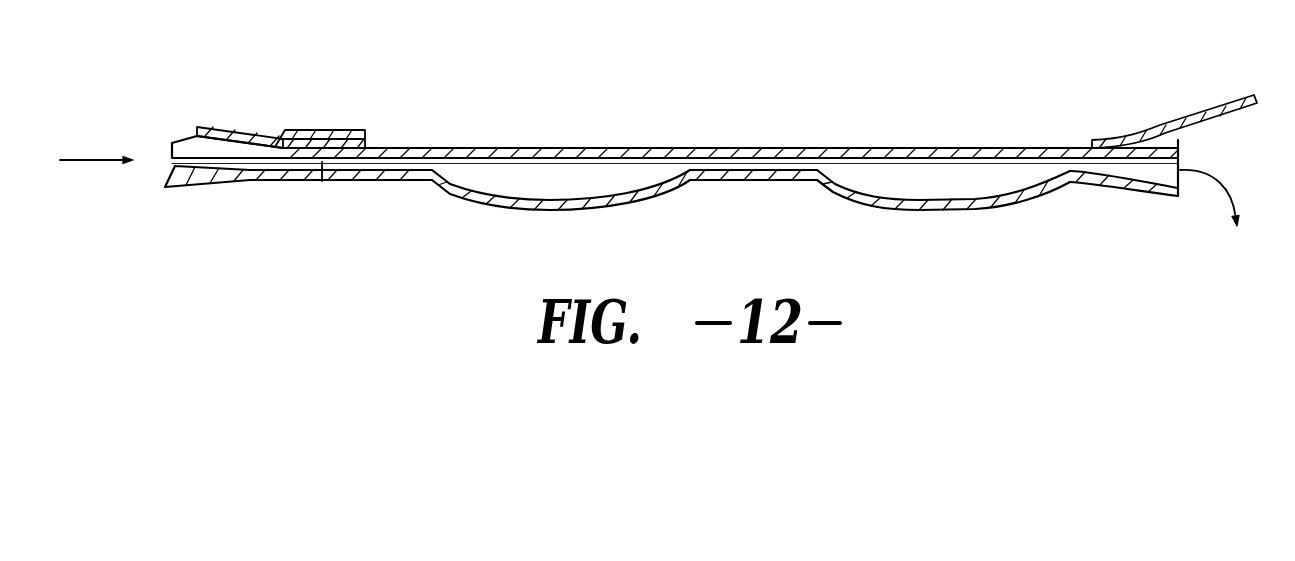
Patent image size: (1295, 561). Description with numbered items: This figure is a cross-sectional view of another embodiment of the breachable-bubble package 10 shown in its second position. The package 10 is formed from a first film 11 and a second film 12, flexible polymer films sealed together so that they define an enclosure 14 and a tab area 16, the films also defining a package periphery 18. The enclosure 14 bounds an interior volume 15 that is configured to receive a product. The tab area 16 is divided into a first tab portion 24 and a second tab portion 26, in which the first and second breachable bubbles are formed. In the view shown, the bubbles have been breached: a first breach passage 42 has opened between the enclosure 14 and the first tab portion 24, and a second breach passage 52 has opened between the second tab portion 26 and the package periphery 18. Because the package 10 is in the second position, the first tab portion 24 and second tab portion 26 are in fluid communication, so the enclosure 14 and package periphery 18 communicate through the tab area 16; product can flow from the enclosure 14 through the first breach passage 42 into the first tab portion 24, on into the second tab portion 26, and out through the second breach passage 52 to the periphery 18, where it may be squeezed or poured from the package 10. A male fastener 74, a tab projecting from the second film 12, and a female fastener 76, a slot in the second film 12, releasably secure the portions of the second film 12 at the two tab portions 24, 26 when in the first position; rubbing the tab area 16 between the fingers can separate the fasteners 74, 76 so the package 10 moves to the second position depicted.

The package 10 is at (330, 68).
The first film 11 is at (232, 187).
The second film 12 is at (197, 137).
The enclosure 14 is at (175, 166).
The interior volume 15 is at (175, 153).
The tab area 16 is at (643, 105).
The package periphery 18 is at (1142, 200).
The first tab portion 24 is at (522, 208).
The second tab portion 26 is at (973, 208).
The first breach passage 42 is at (322, 181).
The second breach passage 52 is at (1192, 149).
The male fastener 74 is at (1223, 103).
The female fastener 76 is at (340, 128).